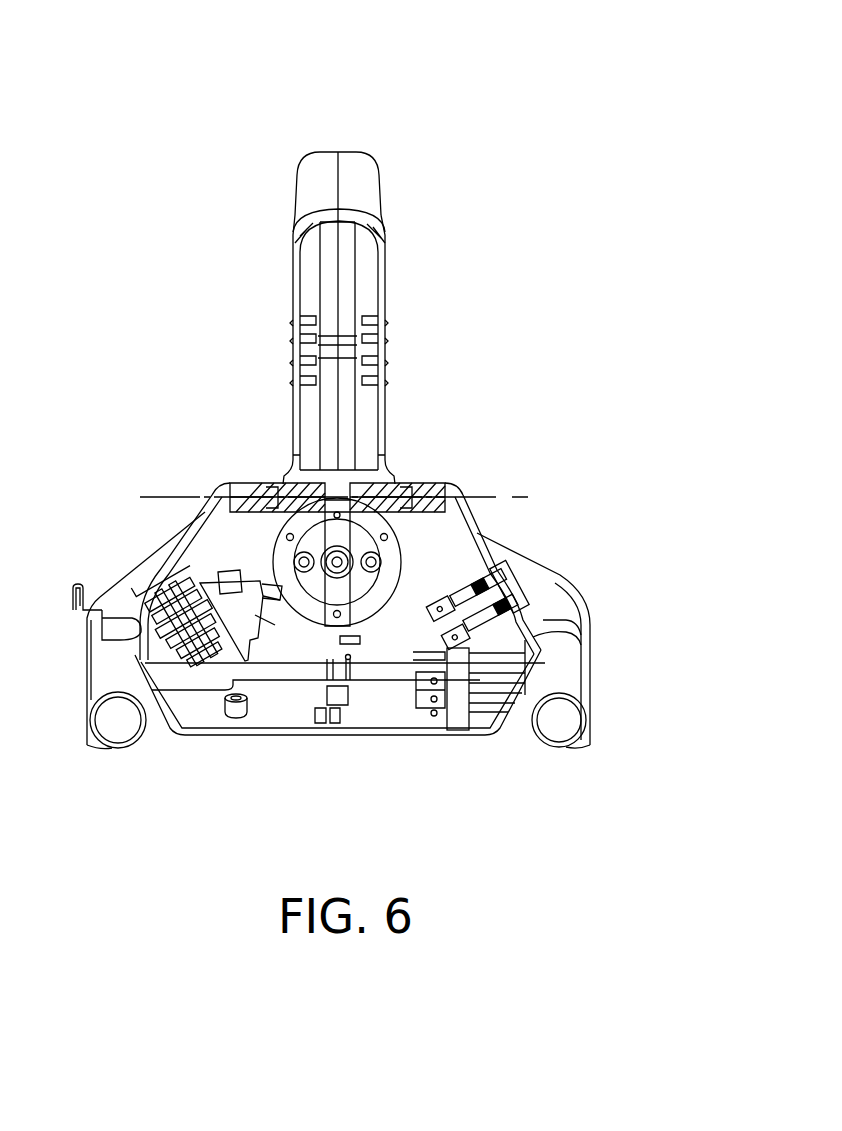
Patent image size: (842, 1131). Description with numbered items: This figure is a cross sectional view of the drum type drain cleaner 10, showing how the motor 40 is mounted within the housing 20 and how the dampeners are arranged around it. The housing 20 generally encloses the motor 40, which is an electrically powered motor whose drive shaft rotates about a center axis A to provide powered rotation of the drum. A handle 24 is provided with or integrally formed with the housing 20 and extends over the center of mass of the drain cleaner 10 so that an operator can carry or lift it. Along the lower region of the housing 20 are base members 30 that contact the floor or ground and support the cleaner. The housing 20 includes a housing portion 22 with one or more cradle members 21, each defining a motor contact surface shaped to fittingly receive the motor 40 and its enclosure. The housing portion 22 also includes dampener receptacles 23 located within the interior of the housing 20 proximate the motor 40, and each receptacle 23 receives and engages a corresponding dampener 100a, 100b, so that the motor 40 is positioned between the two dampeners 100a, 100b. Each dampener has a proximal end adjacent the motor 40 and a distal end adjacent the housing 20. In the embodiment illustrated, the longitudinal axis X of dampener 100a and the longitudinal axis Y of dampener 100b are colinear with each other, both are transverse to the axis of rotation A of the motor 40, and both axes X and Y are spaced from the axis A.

The drain cleaner 10 is at (118, 97).
The housing 20 is at (465, 507).
The cradle member 21 is at (320, 643).
The housing portion 22 is at (213, 484).
The dampener receptacle 23 is at (200, 513).
The handle 24 is at (383, 190).
The base member 30 is at (86, 690).
The motor 40 is at (358, 583).
The dampener 100a is at (410, 494).
The dampener 100b is at (265, 496).
The center axis A is at (327, 563).
The longitudinal axis of dampener 100a X is at (497, 500).
The longitudinal axis of dampener 100b Y is at (173, 499).